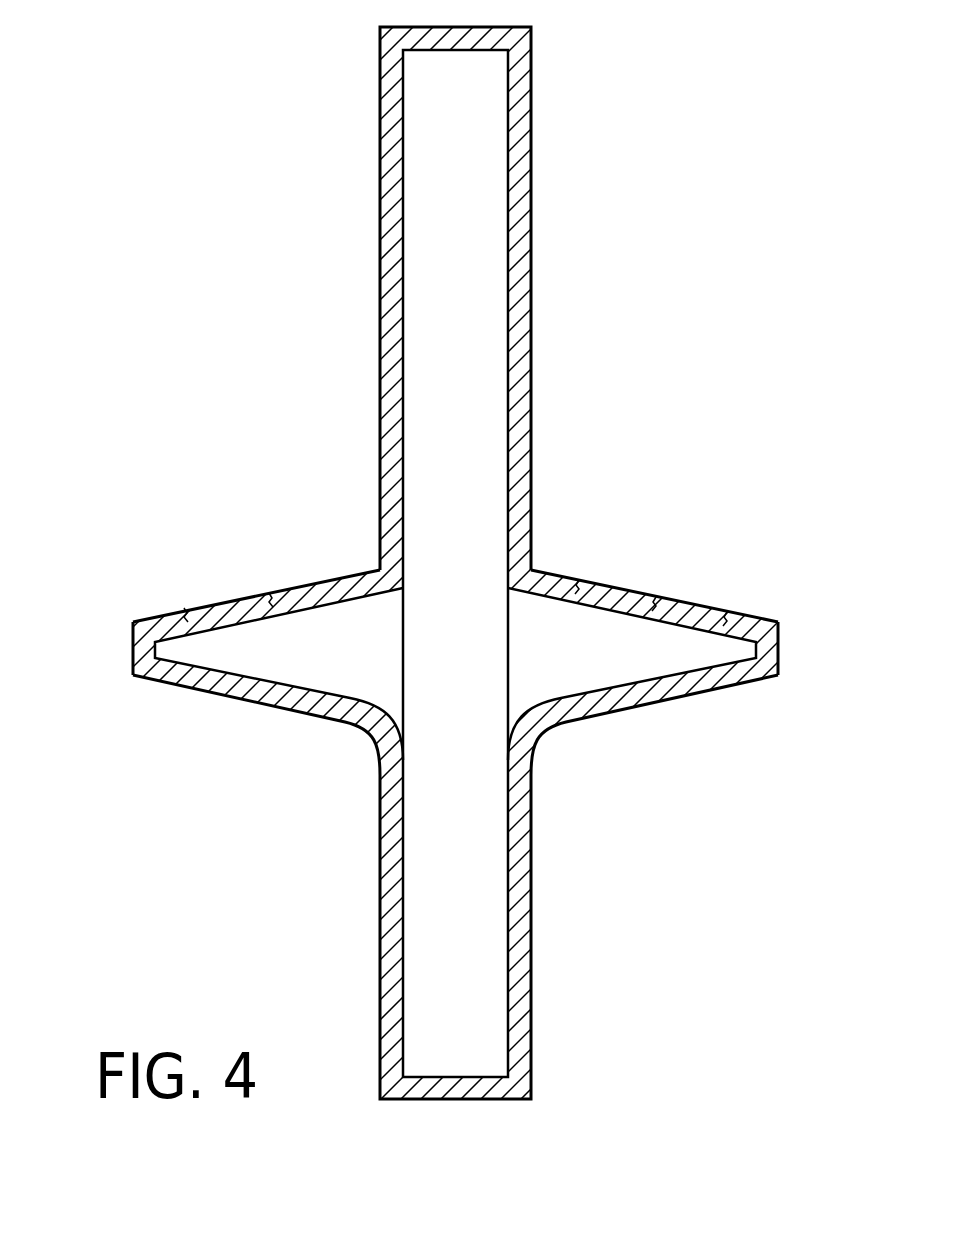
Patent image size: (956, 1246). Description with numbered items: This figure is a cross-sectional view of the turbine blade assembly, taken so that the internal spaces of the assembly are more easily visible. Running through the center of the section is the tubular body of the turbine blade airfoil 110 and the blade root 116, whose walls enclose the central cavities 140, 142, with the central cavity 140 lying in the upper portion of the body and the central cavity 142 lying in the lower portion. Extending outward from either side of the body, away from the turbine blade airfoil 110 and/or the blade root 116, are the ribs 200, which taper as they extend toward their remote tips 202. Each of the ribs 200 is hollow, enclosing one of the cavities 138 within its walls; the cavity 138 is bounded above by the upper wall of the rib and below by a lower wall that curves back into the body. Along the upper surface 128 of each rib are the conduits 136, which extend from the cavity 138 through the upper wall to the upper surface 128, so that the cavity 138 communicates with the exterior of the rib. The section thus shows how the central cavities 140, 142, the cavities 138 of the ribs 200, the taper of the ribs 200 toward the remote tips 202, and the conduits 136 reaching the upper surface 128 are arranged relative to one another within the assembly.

The turbine blade airfoil 110 is at (533, 105).
The blade root 116 is at (533, 1005).
The upper surface 128 is at (327, 578).
The conduits 136 is at (188, 613).
The cavities 138 is at (293, 667).
The central cavity 140 is at (480, 207).
The central cavity 142 is at (463, 912).
The ribs 200 is at (187, 690).
The remote tips 202 is at (133, 650).